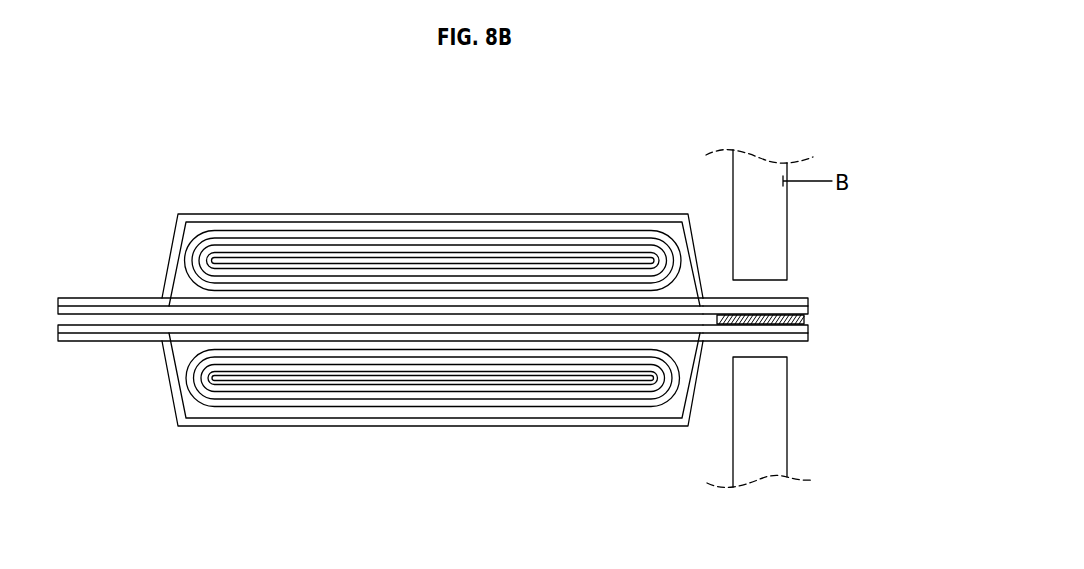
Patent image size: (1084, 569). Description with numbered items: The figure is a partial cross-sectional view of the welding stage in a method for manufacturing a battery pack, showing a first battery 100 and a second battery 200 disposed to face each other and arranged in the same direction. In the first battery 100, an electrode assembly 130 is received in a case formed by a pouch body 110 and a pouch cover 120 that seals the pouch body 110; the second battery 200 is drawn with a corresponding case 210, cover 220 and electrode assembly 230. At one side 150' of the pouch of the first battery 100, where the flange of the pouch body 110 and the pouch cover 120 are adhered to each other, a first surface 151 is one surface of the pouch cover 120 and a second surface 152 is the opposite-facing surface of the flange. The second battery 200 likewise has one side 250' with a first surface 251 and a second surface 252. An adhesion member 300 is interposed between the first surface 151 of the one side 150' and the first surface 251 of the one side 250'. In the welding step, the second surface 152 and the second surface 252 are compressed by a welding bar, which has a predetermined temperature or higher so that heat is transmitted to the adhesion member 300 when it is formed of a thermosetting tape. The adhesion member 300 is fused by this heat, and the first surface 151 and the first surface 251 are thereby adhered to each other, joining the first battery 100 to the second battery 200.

The first battery 100 is at (380, 415).
The pouch body 110 is at (416, 420).
The pouch cover 120 is at (583, 326).
The electrode assembly 130 is at (465, 378).
The second battery 200 is at (380, 226).
The second pouch case 210 is at (415, 220).
The second electrode lead plate 220 is at (583, 314).
The second electrode assembly 230 is at (465, 262).
The one side of the pouch of the second battery 250' is at (790, 256).
The first surface 251 is at (758, 298).
The second surface 252 is at (762, 314).
The one side of the pouch 150' is at (794, 386).
The first surface 151 is at (808, 324).
The second surface 152 is at (768, 370).
The adhesion member 300 is at (810, 318).